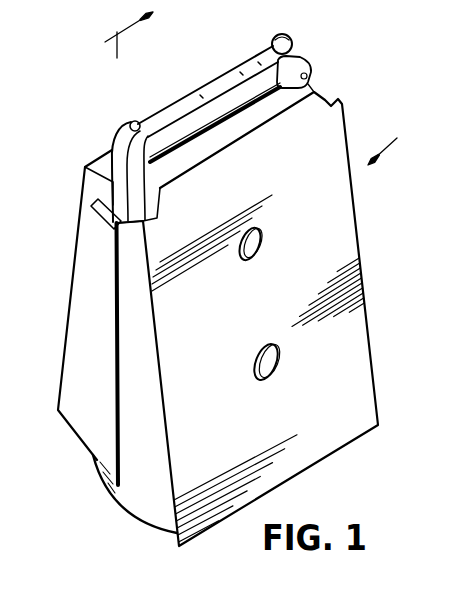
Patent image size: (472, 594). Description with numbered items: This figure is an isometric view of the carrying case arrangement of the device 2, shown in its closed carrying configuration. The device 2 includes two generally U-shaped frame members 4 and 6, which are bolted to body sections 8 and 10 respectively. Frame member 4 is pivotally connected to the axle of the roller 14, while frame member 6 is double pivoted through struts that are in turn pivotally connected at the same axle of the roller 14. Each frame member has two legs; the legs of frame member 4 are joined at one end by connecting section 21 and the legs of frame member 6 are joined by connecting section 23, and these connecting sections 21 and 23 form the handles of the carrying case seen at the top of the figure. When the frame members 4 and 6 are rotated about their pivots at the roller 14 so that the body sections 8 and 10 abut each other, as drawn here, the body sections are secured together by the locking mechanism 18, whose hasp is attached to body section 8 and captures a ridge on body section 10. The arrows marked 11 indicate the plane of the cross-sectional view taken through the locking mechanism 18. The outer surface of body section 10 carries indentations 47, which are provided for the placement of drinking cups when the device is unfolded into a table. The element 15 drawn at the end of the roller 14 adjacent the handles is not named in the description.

The device 2 is at (245, 88).
The frame member 4 is at (220, 60).
The frame member 6 is at (310, 58).
The body section 8 is at (78, 352).
The body section 10 is at (360, 232).
The side panel 11 is at (65, 187).
The roller 14 is at (130, 520).
The knob 15 is at (279, 34).
The locking mechanism 18 is at (103, 224).
The connecting section 21 is at (168, 110).
The connecting section 23 is at (219, 125).
The indentations 47 is at (255, 262).